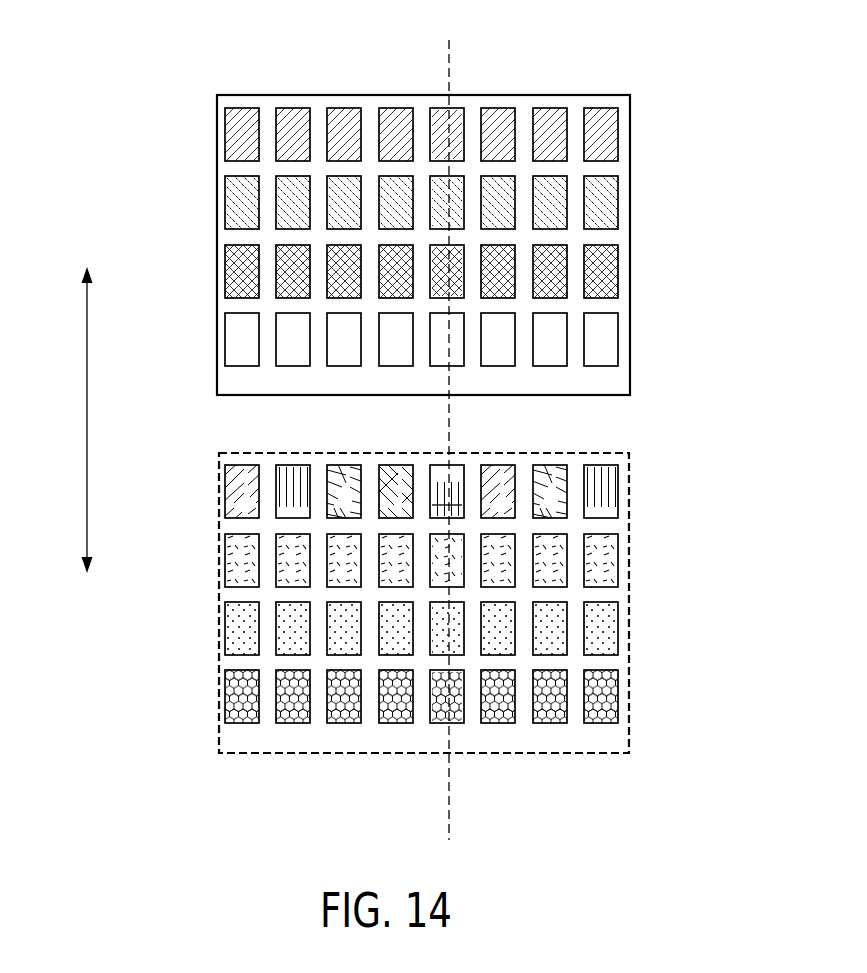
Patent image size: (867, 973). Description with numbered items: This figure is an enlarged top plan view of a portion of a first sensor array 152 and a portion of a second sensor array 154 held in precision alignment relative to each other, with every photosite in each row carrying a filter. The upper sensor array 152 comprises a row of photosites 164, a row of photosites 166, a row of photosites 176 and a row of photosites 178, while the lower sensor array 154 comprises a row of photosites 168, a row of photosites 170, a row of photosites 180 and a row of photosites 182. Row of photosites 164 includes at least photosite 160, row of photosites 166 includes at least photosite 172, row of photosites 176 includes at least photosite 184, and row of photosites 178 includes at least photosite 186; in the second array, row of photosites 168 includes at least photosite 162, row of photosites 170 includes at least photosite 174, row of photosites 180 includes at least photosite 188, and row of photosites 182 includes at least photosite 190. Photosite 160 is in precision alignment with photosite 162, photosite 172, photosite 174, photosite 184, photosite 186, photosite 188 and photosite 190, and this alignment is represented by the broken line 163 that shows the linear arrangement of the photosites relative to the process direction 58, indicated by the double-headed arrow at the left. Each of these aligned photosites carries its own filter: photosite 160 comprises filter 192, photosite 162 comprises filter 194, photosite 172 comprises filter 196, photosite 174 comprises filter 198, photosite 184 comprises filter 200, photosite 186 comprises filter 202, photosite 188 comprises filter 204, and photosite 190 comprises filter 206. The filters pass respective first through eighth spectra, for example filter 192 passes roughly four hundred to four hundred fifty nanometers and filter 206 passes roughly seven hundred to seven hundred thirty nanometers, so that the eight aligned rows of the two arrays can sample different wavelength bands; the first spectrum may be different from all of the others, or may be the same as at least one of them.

The process direction 58 is at (85, 418).
The sensor array 152 is at (679, 211).
The sensor array 154 is at (679, 568).
The photosite 160 is at (457, 122).
The photosite 162 is at (455, 473).
The broken line 163 is at (453, 808).
The row of photosites 164 is at (189, 128).
The row of photosites 166 is at (189, 196).
The row of photosites 168 is at (189, 483).
The row of photosites 170 is at (189, 553).
The photosite 172 is at (459, 217).
The photosite 174 is at (458, 567).
The row of photosites 176 is at (189, 266).
The row of photosites 178 is at (189, 331).
The row of photosites 180 is at (189, 623).
The row of photosites 182 is at (189, 691).
The photosite 184 is at (457, 287).
The photosite 186 is at (459, 357).
The photosite 188 is at (437, 607).
The photosite 190 is at (437, 720).
The filter 192 is at (438, 122).
The filter 194 is at (437, 473).
The filter 196 is at (438, 217).
The filter 198 is at (440, 567).
The filter 200 is at (438, 287).
The filter 202 is at (438, 357).
The filter 204 is at (459, 607).
The filter 206 is at (458, 720).